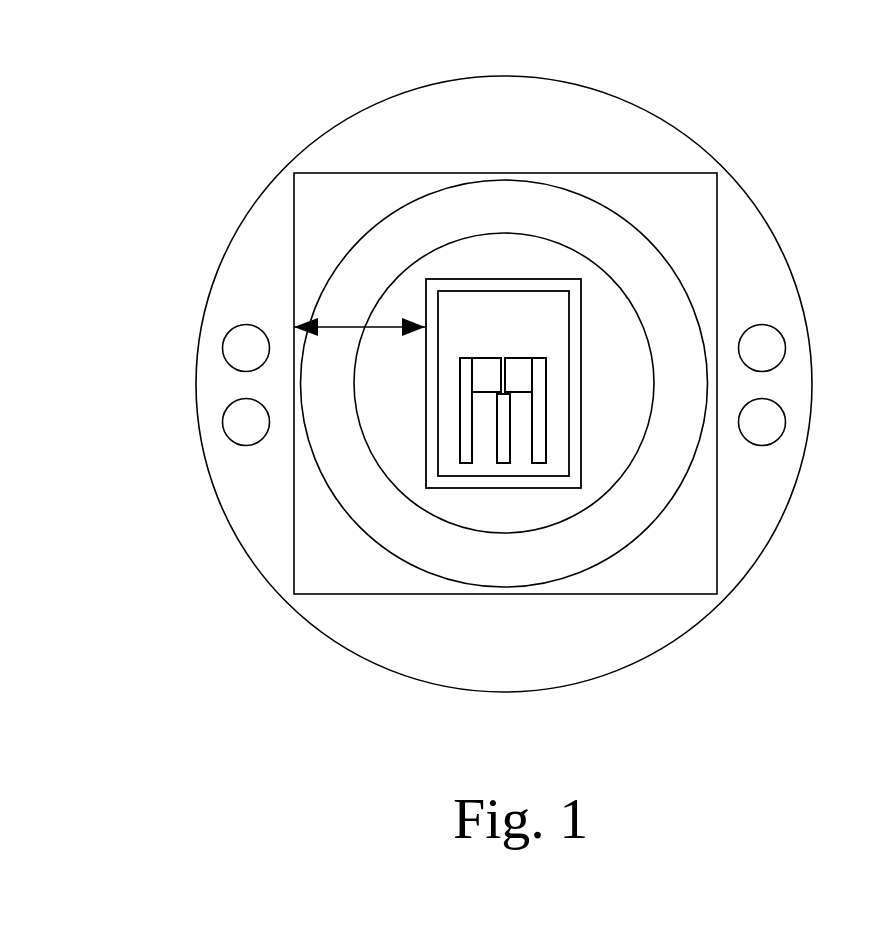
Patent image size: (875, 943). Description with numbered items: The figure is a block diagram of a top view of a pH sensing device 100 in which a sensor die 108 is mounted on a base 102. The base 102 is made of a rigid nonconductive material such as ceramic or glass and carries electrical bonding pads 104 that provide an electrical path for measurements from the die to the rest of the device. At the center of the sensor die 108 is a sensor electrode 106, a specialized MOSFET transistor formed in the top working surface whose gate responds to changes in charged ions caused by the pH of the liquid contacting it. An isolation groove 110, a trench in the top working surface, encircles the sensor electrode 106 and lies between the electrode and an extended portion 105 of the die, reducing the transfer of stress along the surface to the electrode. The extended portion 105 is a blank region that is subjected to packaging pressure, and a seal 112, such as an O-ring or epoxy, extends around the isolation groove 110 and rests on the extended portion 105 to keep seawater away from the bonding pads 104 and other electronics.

The sensor device 100 is at (130, 125).
The base 102 is at (756, 205).
The bonding pads 104 is at (786, 424).
The extended portion 105 is at (378, 328).
The sensor electrode 106 is at (486, 357).
The sensor die 108 is at (560, 173).
The isolation groove 110 is at (425, 442).
The seal 112 is at (360, 508).